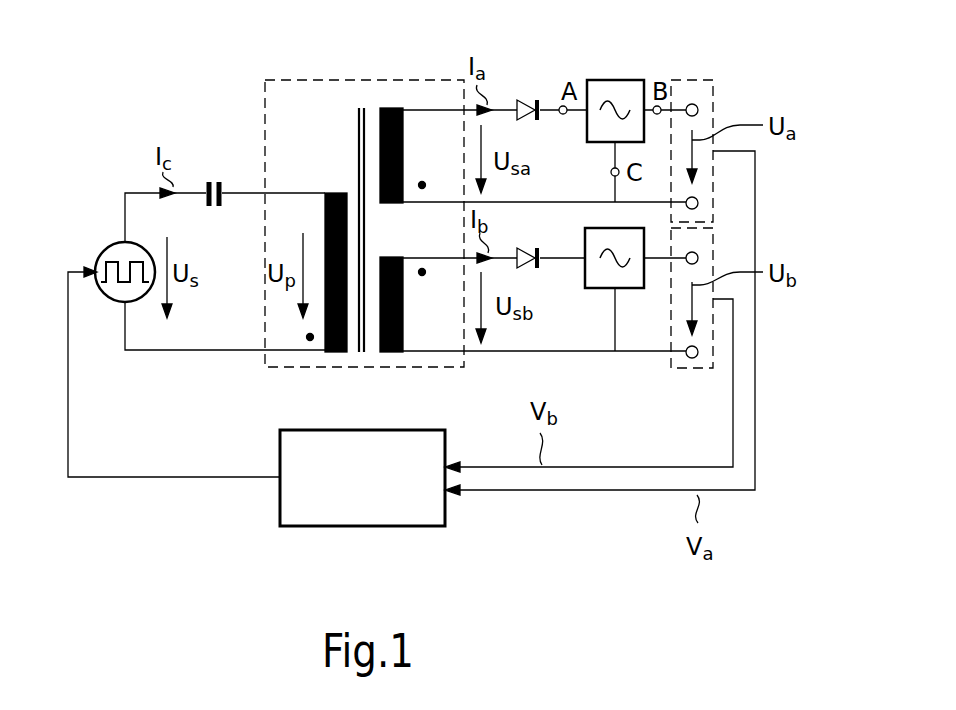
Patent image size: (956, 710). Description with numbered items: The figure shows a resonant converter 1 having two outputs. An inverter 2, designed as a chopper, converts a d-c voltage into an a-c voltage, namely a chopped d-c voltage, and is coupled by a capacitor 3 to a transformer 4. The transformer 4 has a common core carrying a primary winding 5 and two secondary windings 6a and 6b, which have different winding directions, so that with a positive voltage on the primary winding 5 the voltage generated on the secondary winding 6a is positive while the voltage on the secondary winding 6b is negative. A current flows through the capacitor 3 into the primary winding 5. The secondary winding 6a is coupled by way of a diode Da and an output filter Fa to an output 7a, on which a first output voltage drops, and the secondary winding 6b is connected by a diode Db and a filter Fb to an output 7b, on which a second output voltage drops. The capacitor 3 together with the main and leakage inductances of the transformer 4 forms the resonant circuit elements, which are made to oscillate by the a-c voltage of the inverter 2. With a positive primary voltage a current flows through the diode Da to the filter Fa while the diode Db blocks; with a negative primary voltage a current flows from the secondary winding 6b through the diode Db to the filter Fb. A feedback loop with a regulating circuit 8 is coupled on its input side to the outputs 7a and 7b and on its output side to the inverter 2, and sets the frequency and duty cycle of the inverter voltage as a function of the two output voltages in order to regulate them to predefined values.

The resonant converter 1 is at (121, 558).
The inverter 2 is at (107, 249).
The capacitor 3 is at (210, 180).
The transformer 4 is at (355, 79).
The primary winding 5 is at (337, 193).
The secondary winding 6a is at (403, 145).
The secondary winding 6b is at (403, 293).
The output 7a is at (690, 80).
The output 7b is at (692, 370).
The regulating circuit 8 is at (400, 528).
The diode Da is at (545, 107).
The diode Db is at (545, 252).
The output filter Fa is at (613, 80).
The output filter Fb is at (627, 288).